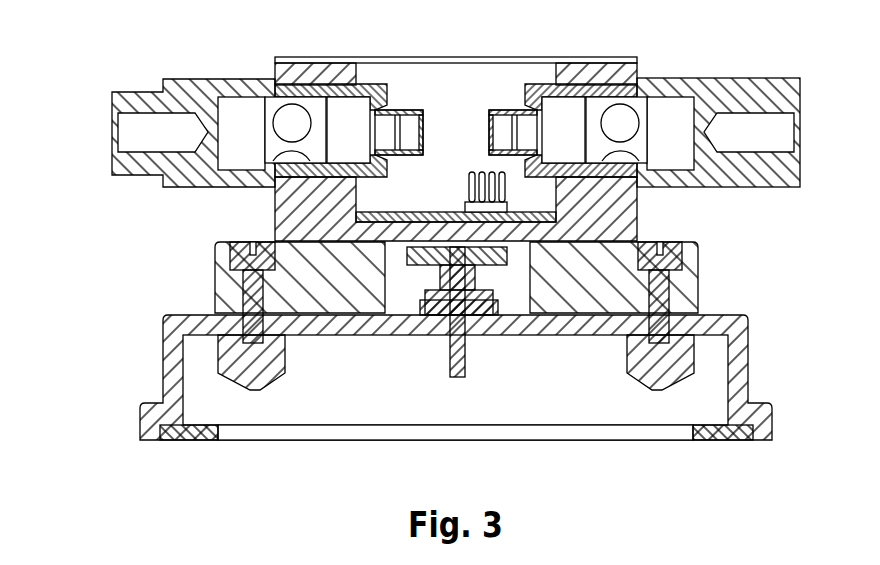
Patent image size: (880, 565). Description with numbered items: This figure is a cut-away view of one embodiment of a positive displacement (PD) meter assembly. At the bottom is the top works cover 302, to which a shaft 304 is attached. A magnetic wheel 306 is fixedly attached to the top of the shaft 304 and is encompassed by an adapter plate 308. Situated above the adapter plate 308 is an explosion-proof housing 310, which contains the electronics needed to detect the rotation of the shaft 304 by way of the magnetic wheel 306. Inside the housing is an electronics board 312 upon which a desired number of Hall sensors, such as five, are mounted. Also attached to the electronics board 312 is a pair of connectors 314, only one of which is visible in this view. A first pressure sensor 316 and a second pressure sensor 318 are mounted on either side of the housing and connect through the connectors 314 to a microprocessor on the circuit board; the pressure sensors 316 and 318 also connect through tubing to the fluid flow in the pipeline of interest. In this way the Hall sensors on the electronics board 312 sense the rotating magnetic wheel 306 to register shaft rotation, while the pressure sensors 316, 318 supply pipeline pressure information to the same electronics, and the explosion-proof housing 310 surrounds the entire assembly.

The top works cover 302 is at (750, 355).
The shaft 304 is at (447, 352).
The magnetic wheel 306 is at (417, 266).
The adapter plate 308 is at (700, 270).
The explosion-proof housing 310 is at (275, 203).
The electronics board 312 is at (447, 212).
The connectors 314 is at (508, 192).
The pressure sensor 316 is at (135, 92).
The pressure sensor 318 is at (745, 77).